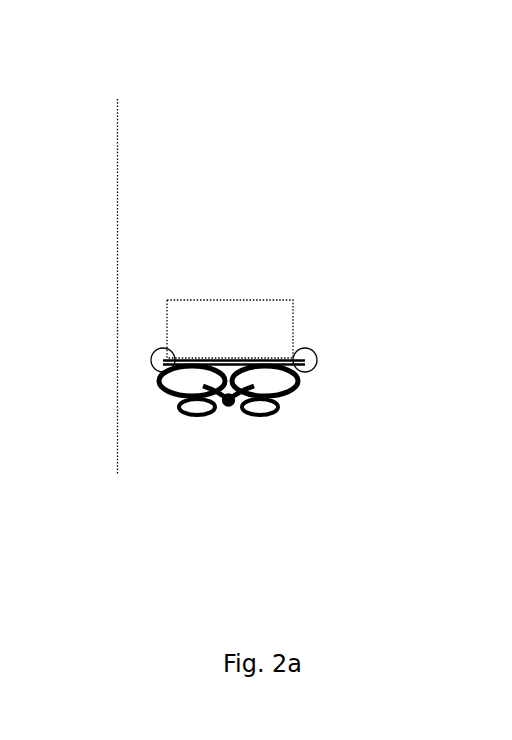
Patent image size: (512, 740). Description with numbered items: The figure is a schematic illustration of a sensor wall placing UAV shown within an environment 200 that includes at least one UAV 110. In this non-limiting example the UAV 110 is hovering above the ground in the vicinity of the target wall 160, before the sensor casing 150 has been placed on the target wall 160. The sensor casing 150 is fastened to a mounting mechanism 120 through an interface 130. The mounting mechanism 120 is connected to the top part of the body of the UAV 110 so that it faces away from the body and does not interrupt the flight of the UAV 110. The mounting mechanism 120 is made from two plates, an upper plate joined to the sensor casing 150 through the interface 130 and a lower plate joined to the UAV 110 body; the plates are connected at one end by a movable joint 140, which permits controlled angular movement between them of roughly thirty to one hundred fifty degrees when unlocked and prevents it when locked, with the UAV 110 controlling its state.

The environment 200 is at (141, 77).
The UAV 110 is at (228, 406).
The mounting mechanism 120 is at (279, 359).
The interface 130 is at (318, 360).
The movable joint 140 is at (151, 362).
The sensor casing 150 is at (230, 329).
The target wall 160 is at (110, 264).